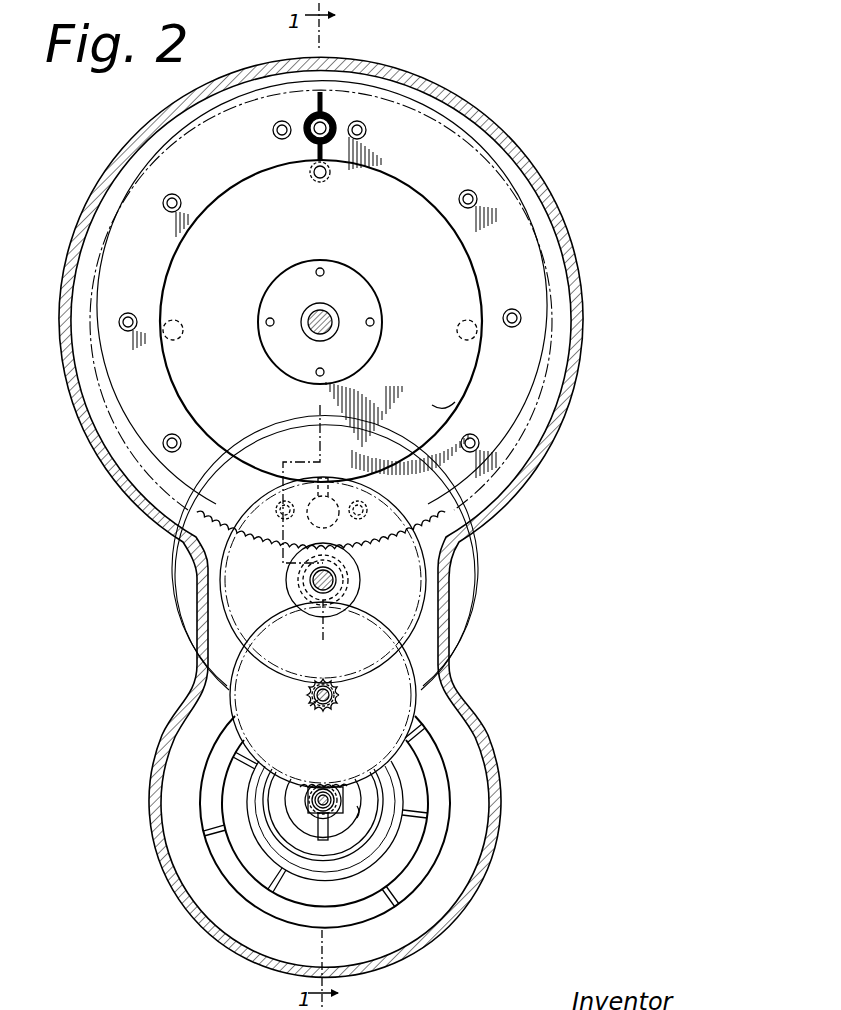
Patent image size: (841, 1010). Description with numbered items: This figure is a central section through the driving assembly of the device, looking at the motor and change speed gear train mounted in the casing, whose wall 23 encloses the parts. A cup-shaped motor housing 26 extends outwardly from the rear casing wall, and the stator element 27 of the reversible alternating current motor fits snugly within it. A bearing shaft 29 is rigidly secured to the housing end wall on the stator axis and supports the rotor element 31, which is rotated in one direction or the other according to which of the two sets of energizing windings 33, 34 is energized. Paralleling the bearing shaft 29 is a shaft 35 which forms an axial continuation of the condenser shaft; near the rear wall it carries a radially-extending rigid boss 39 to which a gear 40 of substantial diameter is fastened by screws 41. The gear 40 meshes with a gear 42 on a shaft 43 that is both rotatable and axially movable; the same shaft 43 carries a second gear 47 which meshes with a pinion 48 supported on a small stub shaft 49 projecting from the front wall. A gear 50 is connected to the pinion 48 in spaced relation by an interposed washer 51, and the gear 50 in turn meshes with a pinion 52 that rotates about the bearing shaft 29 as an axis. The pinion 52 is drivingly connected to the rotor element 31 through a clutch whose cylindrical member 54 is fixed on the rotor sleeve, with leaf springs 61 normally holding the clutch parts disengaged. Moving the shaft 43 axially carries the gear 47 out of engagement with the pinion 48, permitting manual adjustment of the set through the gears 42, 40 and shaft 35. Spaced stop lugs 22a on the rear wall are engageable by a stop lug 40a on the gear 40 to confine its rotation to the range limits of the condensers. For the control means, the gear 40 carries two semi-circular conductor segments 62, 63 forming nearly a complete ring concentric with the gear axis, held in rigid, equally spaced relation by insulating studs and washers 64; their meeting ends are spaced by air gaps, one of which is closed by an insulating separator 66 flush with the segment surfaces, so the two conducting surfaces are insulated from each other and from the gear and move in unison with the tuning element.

The stop lugs 22a is at (180, 338).
The housing wall 23 is at (548, 206).
The motor housing 26 is at (470, 752).
The stator element 27 is at (463, 788).
The bearing shaft 29 is at (333, 800).
The rotor element 31 is at (372, 778).
The energizing windings 33 is at (228, 855).
The energizing windings 34 is at (235, 796).
The shaft 35 is at (332, 314).
The boss 39 is at (358, 346).
The gear 40 is at (467, 400).
The stop lug 40a is at (323, 182).
The screws 41 is at (376, 322).
The gear 42 is at (296, 580).
The shaft 43 is at (340, 580).
The second gear 47 is at (428, 598).
The pinion 48 is at (342, 693).
The stub shaft 49 is at (312, 704).
The gear 50 is at (410, 655).
The washer 51 is at (303, 816).
The pinion 52 is at (300, 790).
The cylindrical member 54 is at (358, 810).
The leaf springs 61 is at (330, 826).
The conductor segment 62 is at (525, 292).
The conductor segment 63 is at (121, 266).
The insulating studs and washers 64 is at (279, 140).
The insulating separator 66 is at (327, 116).